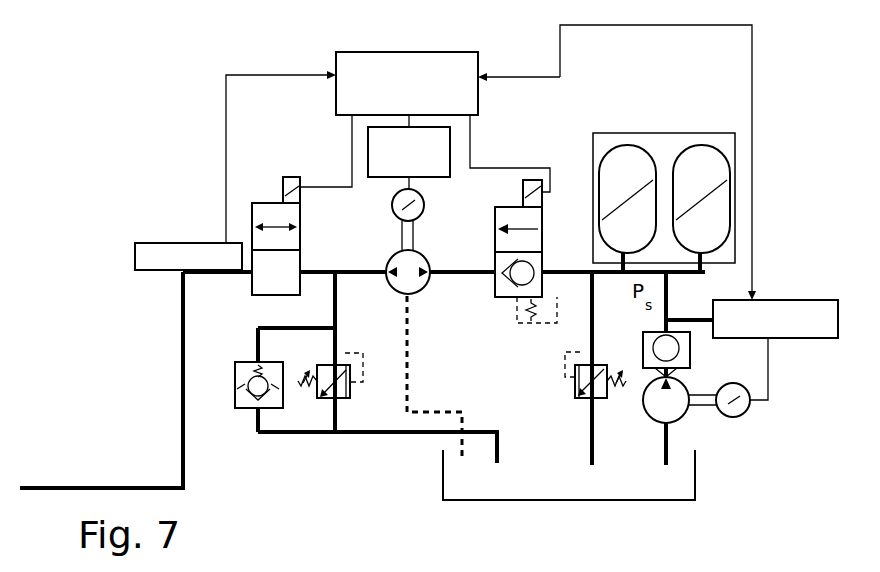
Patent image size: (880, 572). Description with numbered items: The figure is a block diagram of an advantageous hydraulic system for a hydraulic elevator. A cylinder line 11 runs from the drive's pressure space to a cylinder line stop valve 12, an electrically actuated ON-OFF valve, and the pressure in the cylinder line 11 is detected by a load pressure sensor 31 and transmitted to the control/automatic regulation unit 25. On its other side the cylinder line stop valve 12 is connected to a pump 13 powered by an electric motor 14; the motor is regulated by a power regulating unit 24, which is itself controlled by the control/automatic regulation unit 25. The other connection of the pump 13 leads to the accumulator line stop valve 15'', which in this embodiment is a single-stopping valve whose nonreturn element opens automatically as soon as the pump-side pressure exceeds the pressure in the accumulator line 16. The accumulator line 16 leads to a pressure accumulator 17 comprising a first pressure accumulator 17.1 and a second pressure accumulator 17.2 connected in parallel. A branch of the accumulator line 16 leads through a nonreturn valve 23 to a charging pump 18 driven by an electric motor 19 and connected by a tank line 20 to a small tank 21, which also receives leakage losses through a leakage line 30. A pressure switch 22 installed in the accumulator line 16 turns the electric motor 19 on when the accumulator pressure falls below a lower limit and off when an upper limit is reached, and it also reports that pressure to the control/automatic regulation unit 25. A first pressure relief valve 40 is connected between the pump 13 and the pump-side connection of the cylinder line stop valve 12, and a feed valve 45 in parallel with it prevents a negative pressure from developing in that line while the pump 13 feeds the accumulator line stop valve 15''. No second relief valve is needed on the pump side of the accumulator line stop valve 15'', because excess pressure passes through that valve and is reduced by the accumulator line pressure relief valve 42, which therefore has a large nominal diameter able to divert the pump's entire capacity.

The cylinder line 11 is at (178, 405).
The cylinder line stop valve 12 is at (262, 248).
The pump 13 is at (398, 287).
The electric motor 14 is at (393, 207).
The accumulator line stop valve 15'' is at (535, 226).
The accumulator line 16 is at (577, 283).
The pressure accumulator 17 is at (664, 157).
The first pressure accumulator 17.1 is at (628, 158).
The second pressure accumulator 17.2 is at (705, 158).
The charging pump 18 is at (672, 407).
The electric motor 19 is at (757, 410).
The tank line 20 is at (668, 440).
The tank 21 is at (477, 490).
The pressure switch 22 is at (800, 300).
The nonreturn valve 23 is at (680, 340).
The power regulating unit 24 is at (368, 152).
The control/automatic regulation unit 25 is at (370, 52).
The leakage line 30 is at (418, 400).
The load pressure sensor 31 is at (232, 243).
The first pressure relief valve 40 is at (332, 388).
The accumulator line pressure relief valve 42 is at (590, 388).
The feed valve 45 is at (235, 410).